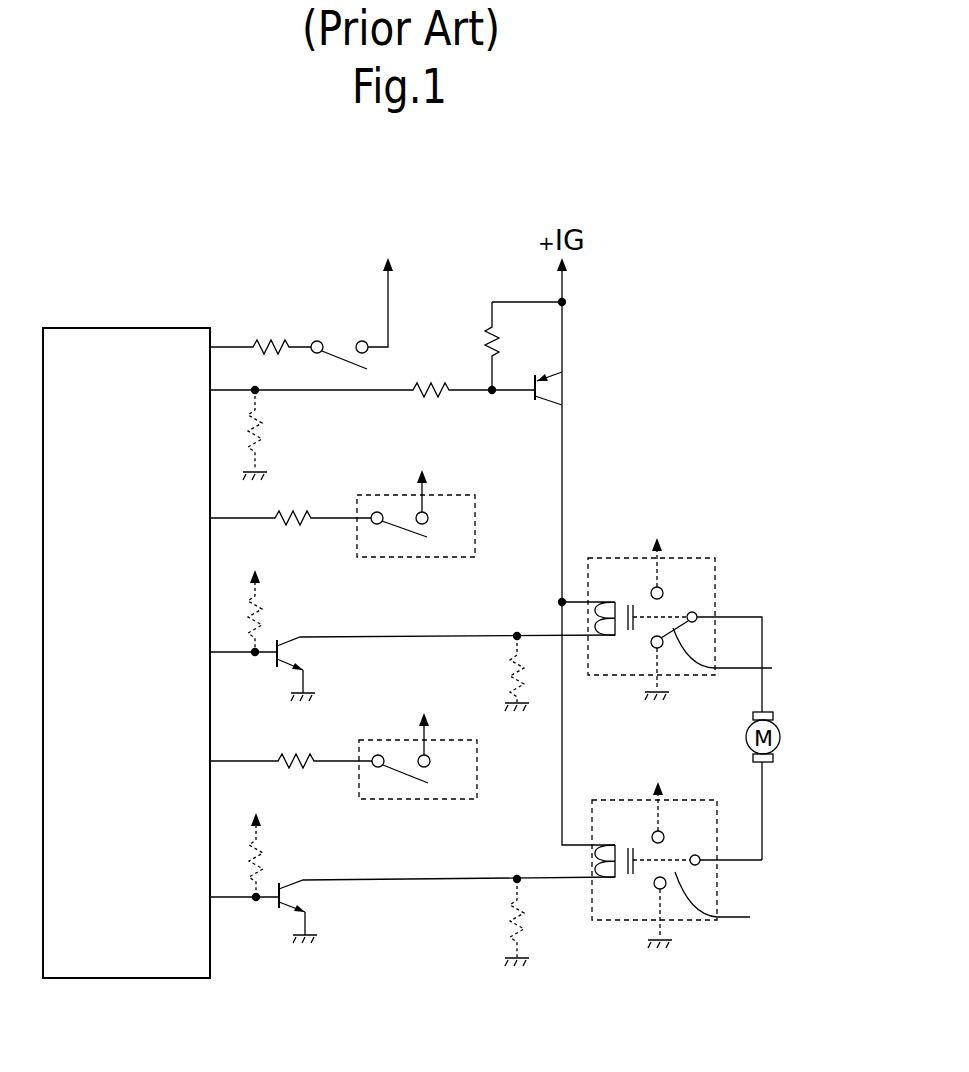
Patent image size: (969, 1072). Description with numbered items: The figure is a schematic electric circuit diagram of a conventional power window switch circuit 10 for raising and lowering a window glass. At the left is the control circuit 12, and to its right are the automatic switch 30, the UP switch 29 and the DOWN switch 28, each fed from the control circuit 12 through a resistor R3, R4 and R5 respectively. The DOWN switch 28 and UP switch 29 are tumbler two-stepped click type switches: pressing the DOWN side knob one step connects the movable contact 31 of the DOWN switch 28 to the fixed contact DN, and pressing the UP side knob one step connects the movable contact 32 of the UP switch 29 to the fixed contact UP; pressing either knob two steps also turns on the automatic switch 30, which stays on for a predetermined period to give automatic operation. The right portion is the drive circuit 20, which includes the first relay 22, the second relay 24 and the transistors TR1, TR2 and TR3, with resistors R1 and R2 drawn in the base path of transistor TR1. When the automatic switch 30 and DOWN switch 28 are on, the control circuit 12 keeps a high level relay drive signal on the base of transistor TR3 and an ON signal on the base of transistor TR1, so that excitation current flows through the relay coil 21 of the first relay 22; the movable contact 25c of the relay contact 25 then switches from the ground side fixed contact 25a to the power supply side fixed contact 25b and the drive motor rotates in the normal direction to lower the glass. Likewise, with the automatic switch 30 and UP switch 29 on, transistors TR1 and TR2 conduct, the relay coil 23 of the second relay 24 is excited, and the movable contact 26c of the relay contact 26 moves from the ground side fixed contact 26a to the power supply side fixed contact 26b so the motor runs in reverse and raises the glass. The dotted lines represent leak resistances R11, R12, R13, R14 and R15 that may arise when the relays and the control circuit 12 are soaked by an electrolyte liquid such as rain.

The power window switch circuit 10 is at (605, 262).
The control circuit 12 is at (125, 328).
The drive circuit 20 is at (466, 232).
The relay coil 21 is at (617, 845).
The first relay 22 is at (720, 845).
The relay coil 23 is at (615, 600).
The second relay 24 is at (717, 603).
The relay contact 25 is at (703, 860).
The ground side fixed contact 25a is at (656, 887).
The power supply side fixed contact 25b is at (662, 833).
The movable contact 25c is at (745, 903).
The relay contact 26 is at (698, 612).
The ground side fixed contact 26a is at (653, 646).
The power supply side fixed contact 26b is at (661, 589).
The movable contact 26c is at (754, 655).
The DOWN switch 28 is at (429, 756).
The UP switch 29 is at (411, 508).
The automatic switch 30 is at (345, 343).
The movable contact 31 is at (407, 775).
The movable contact 32 is at (407, 528).
The resistor R1 is at (498, 327).
The resistor R2 is at (428, 382).
The resistor R3 is at (268, 340).
The resistor R4 is at (300, 510).
The resistor R5 is at (288, 770).
The leak resistance R11 is at (265, 411).
The leak resistance R12 is at (265, 622).
The leak resistance R13 is at (267, 845).
The leak resistance R14 is at (513, 662).
The leak resistance R15 is at (512, 910).
The transistor TR1 is at (530, 401).
The transistor TR2 is at (275, 663).
The transistor TR3 is at (288, 905).
The fixed contact UP is at (427, 512).
The fixed contact DN is at (430, 761).